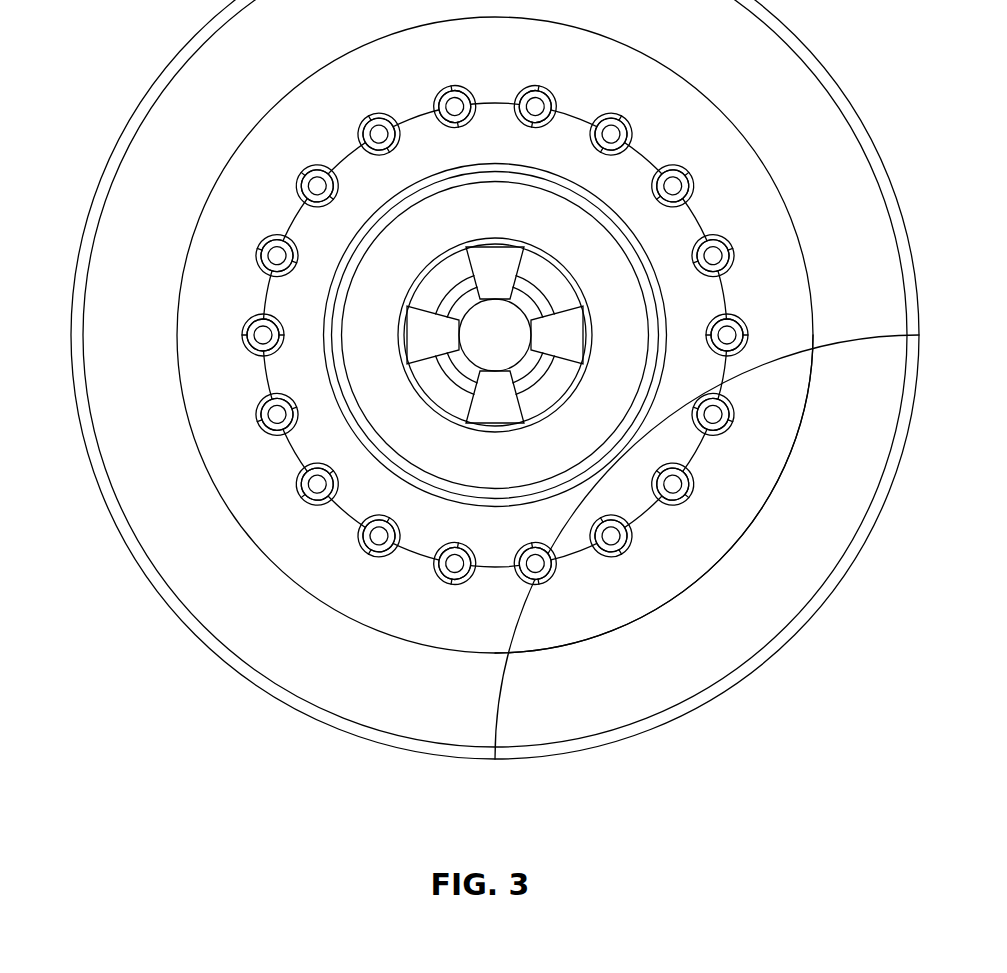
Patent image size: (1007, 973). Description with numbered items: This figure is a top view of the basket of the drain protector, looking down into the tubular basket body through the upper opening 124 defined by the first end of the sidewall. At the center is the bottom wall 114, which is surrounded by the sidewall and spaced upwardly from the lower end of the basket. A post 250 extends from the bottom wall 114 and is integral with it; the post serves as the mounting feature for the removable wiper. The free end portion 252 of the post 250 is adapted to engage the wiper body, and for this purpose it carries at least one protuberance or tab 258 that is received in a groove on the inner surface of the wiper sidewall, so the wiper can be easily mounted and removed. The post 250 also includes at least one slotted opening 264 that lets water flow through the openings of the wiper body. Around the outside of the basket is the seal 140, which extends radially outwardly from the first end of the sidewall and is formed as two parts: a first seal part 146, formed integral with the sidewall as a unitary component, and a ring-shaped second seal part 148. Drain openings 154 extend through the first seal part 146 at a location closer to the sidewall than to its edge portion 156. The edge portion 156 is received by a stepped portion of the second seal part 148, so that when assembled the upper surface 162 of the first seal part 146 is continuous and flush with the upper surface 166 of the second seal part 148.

The bottom wall 114 is at (412, 434).
The upper opening 124 is at (583, 203).
The seal 140 is at (227, 638).
The first seal part 146 is at (195, 413).
The second seal part 148 is at (130, 500).
The drain openings 154 is at (450, 585).
The edge portion 156 is at (742, 480).
The upper surface 162 is at (557, 637).
The upper surface 166 is at (627, 712).
The post 250 is at (497, 237).
The free end portion 252 is at (503, 323).
The tab 258 is at (448, 322).
The slotted opening 264 is at (445, 352).